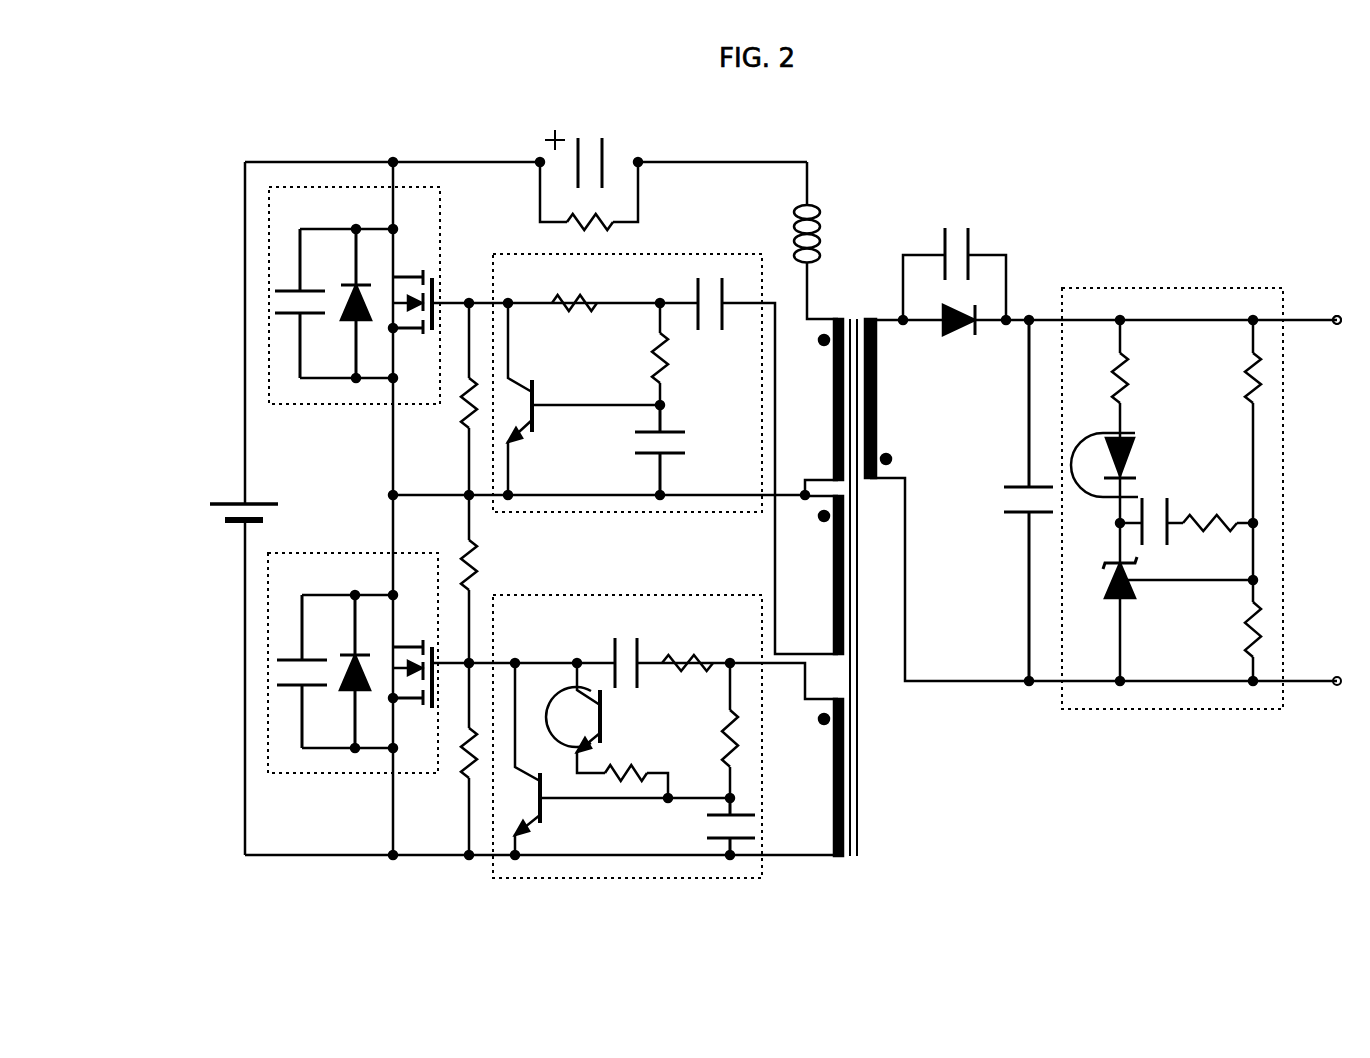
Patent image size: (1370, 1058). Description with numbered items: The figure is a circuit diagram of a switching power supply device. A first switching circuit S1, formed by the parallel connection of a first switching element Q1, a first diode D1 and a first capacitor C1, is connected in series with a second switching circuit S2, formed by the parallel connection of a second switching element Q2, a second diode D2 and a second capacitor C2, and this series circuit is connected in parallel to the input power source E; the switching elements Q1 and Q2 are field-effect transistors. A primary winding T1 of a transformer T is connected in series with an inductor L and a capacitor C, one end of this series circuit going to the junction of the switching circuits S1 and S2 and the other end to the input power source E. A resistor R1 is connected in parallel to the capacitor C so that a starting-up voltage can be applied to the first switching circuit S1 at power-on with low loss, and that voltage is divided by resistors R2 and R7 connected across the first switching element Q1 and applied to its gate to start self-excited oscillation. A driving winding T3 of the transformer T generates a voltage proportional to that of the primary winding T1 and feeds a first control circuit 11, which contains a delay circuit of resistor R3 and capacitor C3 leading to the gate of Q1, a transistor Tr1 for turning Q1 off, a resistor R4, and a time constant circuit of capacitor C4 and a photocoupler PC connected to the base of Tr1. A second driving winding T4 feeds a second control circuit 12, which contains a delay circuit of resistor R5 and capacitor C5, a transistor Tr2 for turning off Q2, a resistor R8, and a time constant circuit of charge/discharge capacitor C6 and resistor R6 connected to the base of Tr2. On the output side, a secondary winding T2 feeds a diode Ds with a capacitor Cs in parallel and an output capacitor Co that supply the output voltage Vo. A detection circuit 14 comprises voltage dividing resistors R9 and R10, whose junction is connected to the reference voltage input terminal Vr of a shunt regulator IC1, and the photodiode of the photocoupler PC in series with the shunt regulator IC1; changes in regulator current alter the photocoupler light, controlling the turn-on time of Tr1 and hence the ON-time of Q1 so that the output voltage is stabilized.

The input power source E is at (221, 531).
The capacitor C is at (573, 146).
The resistor R1 is at (560, 200).
The inductor L is at (819, 240).
The second switching circuit S2 is at (303, 311).
The second capacitor C2 is at (300, 289).
The second diode D2 is at (361, 291).
The second switching element Q2 is at (411, 267).
The first switching circuit S1 is at (296, 684).
The first capacitor C1 is at (302, 657).
The first diode D1 is at (360, 659).
The first switching element Q1 is at (412, 637).
The resistor R8 is at (450, 399).
The resistor R2 is at (493, 579).
The resistor R7 is at (453, 759).
The second control circuit 12 is at (627, 417).
The resistor R5 is at (574, 287).
The capacitor C5 is at (690, 298).
The resistor R6 is at (684, 356).
The charge/discharge capacitor C6 is at (680, 450).
The transistor Tr2 is at (584, 399).
The first control circuit 11 is at (627, 774).
The capacitor C3 is at (623, 647).
The resistor R3 is at (687, 642).
The resistor R4 is at (707, 732).
The capacitor C4 is at (710, 826).
The transistor Tr1 is at (622, 759).
The photocoupler PC is at (831, 559).
The transformer T is at (854, 571).
The primary winding T1 is at (819, 399).
The secondary winding T2 is at (889, 398).
The driving winding T3 is at (815, 777).
The second driving winding T4 is at (819, 575).
The capacitor Cs is at (954, 256).
The diode Ds is at (959, 344).
The capacitor Co is at (1012, 500).
The output voltage Vo is at (1330, 302).
The detection circuit 14 is at (1178, 533).
The shunt regulator IC1 is at (1162, 521).
The reference voltage input terminal Vr is at (1178, 587).
The voltage dividing resistor R9 is at (1225, 361).
The voltage dividing resistor R10 is at (1220, 641).